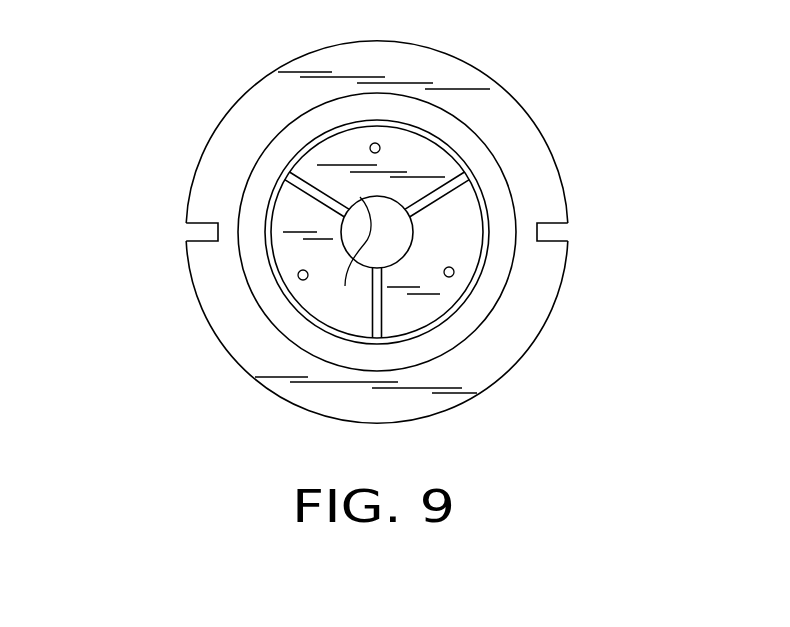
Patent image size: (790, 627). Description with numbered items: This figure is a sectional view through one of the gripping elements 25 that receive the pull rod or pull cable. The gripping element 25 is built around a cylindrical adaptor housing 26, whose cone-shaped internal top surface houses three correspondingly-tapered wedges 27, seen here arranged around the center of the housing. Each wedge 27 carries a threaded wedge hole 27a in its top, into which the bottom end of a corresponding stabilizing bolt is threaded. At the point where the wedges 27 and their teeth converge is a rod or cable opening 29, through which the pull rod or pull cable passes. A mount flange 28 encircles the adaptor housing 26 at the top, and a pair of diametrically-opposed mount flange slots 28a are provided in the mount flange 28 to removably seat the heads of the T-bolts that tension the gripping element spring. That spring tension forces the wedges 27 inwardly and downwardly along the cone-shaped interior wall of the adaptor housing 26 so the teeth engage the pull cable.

The gripping element 25 is at (558, 123).
The adaptor housing 26 is at (240, 276).
The wedge 27 is at (302, 215).
The threaded wedge hole 27a is at (452, 266).
The mount flange 28 is at (505, 123).
The mount flange slot 28a is at (205, 238).
The rod or cable opening 29 is at (371, 256).